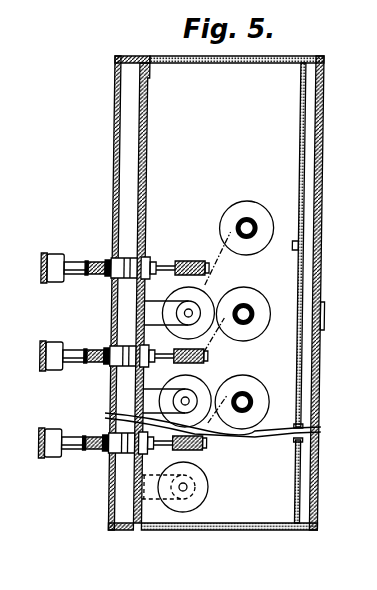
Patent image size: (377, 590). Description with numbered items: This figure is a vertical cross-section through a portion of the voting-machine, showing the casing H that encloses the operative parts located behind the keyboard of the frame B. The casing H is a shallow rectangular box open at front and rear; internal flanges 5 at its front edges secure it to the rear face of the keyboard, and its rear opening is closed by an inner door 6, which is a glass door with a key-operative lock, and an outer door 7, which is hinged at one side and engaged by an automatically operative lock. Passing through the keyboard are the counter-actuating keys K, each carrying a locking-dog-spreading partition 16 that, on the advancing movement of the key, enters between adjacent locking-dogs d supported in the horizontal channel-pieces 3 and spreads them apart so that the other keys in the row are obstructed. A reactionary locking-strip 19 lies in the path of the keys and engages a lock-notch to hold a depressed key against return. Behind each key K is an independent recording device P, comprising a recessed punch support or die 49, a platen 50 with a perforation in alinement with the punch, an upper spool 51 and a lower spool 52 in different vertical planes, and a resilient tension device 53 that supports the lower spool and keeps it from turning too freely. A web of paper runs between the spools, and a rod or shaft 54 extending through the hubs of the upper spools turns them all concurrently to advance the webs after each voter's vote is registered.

The channel-piece 3 is at (96, 261).
The internal flange 5 is at (151, 72).
The inner door 6 is at (333, 160).
The outer door 7 is at (300, 152).
The locking-dog-spreading partition 16 is at (84, 275).
The locking-strip 19 is at (151, 260).
The punch support 49 is at (198, 261).
The platen 50 is at (211, 270).
The upper spool 51 is at (245, 203).
The lower spool 52 is at (208, 295).
The tension device 53 is at (171, 400).
The rod or shaft 54 is at (278, 202).
The key K is at (39, 352).
The casing H is at (214, 139).
The independent recording device P is at (268, 343).
The locking-dog d is at (102, 276).
The frame B is at (140, 48).